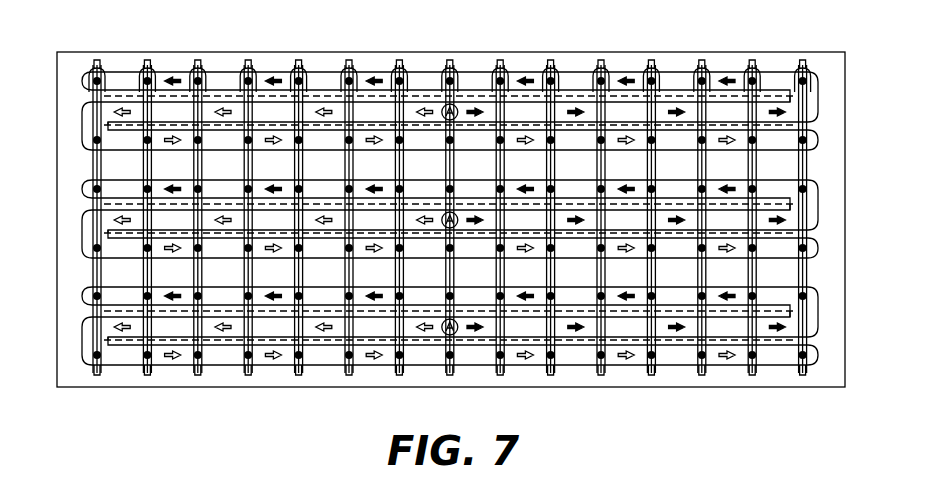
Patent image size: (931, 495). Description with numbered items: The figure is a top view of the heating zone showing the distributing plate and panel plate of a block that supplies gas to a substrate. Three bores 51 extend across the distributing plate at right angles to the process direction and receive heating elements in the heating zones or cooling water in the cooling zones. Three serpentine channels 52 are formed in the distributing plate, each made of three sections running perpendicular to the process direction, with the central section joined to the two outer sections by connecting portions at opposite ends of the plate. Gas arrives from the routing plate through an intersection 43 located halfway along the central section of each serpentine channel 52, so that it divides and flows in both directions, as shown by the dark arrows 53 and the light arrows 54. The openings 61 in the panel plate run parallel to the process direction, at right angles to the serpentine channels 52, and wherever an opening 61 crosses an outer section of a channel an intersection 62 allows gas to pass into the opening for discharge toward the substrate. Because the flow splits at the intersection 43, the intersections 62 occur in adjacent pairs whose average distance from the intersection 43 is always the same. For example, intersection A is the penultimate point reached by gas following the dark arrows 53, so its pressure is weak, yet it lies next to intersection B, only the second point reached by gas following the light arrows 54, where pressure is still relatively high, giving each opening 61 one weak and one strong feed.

The intersection 43 is at (452, 103).
The bore 51 is at (563, 97).
The serpentine channel 52 is at (820, 93).
The dark arrow 53 is at (678, 330).
The light arrow 54 is at (323, 330).
The opening 61 is at (148, 62).
The intersection 62 is at (200, 358).
The intersection A is at (147, 188).
The intersection B is at (147, 248).